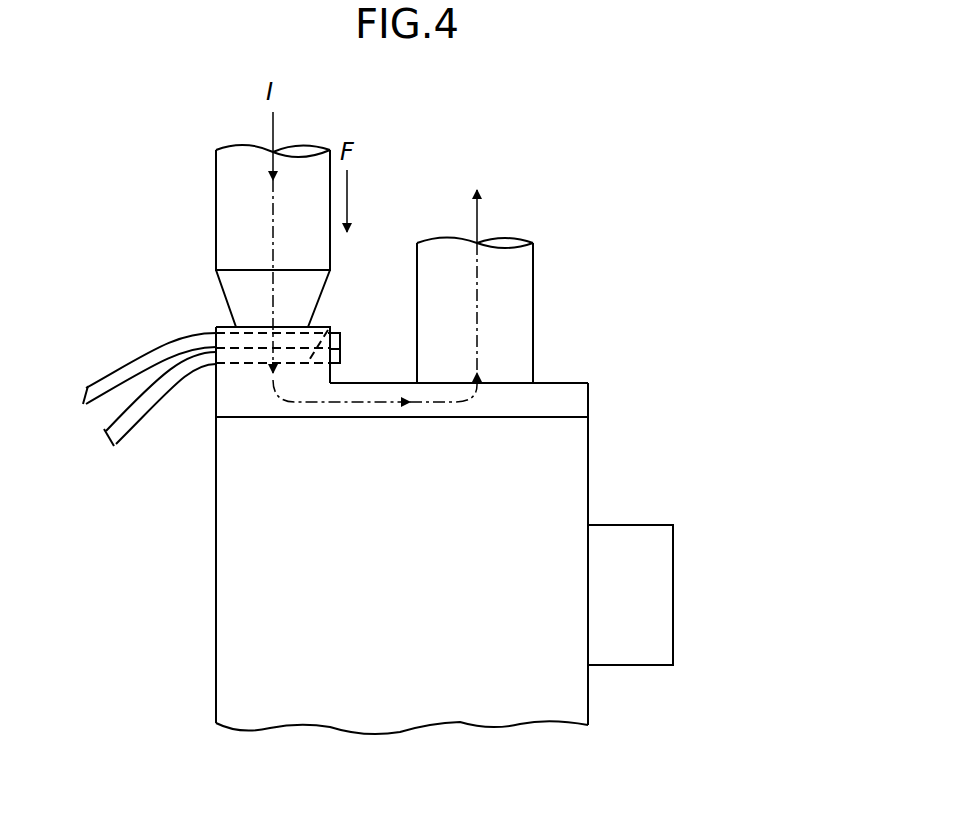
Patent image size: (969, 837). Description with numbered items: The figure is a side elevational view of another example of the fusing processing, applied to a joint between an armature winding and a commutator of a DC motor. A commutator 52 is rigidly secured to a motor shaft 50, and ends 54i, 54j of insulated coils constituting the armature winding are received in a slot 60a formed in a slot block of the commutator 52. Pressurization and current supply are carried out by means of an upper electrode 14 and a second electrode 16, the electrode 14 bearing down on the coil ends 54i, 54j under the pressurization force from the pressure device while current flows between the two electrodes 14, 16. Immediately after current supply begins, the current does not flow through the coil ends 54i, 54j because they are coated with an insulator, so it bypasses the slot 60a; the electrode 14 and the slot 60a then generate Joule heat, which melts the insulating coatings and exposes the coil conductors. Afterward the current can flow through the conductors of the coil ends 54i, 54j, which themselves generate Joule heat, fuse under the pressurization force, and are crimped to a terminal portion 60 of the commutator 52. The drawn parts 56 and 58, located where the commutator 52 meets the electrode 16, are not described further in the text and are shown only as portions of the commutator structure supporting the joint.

The electrode 14 is at (218, 215).
The electrode 16 is at (528, 292).
The motor shaft 50 is at (655, 525).
The commutator 52 is at (213, 582).
The coil end 54i is at (158, 350).
The coil end 54j is at (160, 402).
The top surface 56 is at (578, 383).
The plate 58 is at (574, 400).
The terminal portion 60 is at (312, 375).
The slot 60a is at (328, 330).